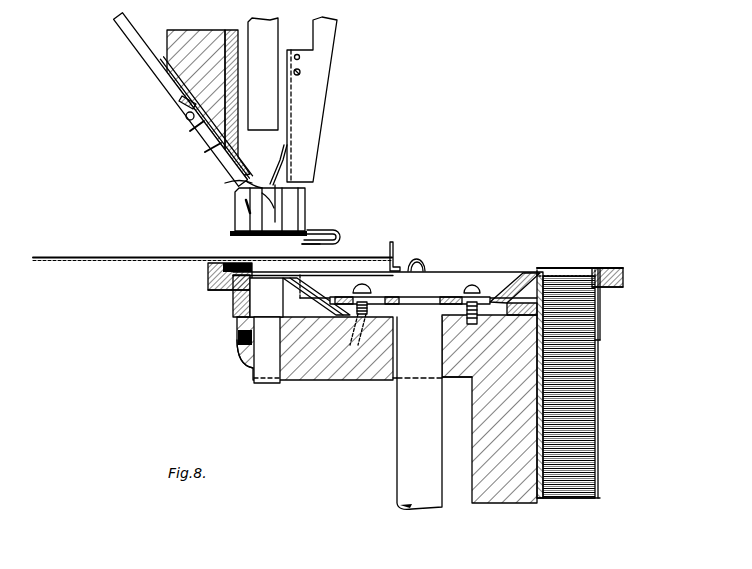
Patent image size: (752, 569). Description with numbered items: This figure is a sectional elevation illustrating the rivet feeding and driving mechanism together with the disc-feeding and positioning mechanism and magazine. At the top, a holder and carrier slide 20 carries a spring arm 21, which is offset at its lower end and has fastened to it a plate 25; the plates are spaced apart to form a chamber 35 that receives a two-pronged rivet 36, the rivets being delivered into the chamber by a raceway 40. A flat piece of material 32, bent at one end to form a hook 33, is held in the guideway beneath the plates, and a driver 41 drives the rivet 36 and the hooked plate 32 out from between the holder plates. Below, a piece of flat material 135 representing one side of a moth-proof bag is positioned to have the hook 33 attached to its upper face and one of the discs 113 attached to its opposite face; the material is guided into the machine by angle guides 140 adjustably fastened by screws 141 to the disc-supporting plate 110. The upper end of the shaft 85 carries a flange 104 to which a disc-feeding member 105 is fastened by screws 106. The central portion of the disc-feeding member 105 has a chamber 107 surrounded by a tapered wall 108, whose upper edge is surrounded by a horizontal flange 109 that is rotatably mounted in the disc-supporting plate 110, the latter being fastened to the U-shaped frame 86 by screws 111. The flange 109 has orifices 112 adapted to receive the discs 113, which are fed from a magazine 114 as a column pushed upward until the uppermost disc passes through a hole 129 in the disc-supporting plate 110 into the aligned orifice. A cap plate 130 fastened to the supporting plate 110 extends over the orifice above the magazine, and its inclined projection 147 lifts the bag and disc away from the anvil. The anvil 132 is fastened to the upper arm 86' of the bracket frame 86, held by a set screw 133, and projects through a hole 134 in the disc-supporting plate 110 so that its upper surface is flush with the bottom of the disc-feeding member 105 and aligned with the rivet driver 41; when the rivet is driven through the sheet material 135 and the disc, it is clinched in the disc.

The holder and carrier slide 20 is at (330, 33).
The spring arm 21 is at (283, 173).
The plate 25 is at (297, 197).
The flat piece of material 32 is at (323, 230).
The hook 33 is at (337, 243).
The chamber 35 is at (258, 188).
The two-pronged rivet 36 is at (246, 194).
The raceway 40 is at (172, 88).
The driver 41 is at (270, 107).
The shaft 85 is at (403, 449).
The U-shaped frame 86 is at (387, 409).
The upper arm of the bracket frame 86' is at (230, 365).
The flange 104 is at (432, 307).
The disc-feeding member 105 is at (508, 300).
The screws 106 is at (371, 290).
The chamber 107 is at (461, 285).
The tapered wall 108 is at (312, 292).
The horizontal flange 109 is at (624, 271).
The disc-supporting plate 110 is at (208, 278).
The screws 111 is at (357, 368).
The orifices 112 is at (552, 274).
The discs 113 is at (273, 236).
The magazine 114 is at (600, 464).
The hole 129 is at (591, 271).
The cap plate 130 is at (207, 265).
The anvil 132 is at (247, 310).
The set screw 133 is at (237, 342).
The hole 134 is at (253, 302).
The piece of flat material 135 is at (135, 257).
The angle guides 140 is at (395, 242).
The screws 141 is at (420, 258).
The projection 147 is at (226, 263).